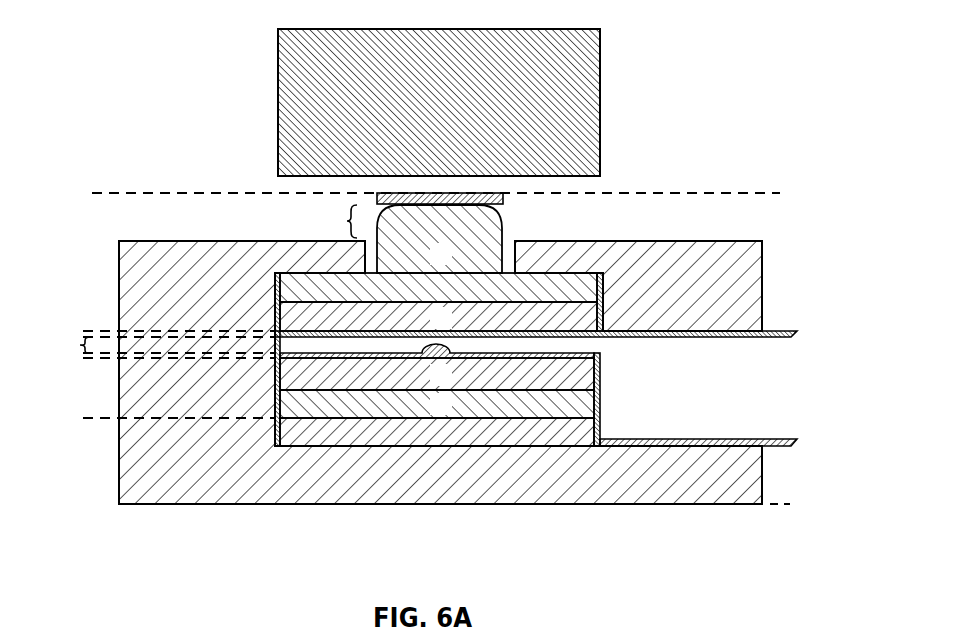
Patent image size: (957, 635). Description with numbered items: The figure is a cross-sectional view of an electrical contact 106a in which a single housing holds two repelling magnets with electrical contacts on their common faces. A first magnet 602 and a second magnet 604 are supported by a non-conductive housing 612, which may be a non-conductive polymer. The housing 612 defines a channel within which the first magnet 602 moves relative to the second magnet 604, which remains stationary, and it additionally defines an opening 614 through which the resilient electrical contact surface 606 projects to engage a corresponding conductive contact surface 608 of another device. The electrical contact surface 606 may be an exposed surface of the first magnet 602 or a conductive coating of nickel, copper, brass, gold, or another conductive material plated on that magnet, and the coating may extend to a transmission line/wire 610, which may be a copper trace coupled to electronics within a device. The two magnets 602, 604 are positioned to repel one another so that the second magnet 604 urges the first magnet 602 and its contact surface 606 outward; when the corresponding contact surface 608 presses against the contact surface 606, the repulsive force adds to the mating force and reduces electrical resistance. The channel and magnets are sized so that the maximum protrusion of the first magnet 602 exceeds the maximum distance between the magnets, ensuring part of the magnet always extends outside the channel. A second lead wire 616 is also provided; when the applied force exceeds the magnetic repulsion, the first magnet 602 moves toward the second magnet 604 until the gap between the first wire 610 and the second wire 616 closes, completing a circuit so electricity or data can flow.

The electrical contact 106a is at (463, 383).
The first magnet 602 is at (92, 193).
The second magnet 604 is at (92, 358).
The electrical contact surface 606 is at (377, 200).
The corresponding conductive contact surface 608 is at (600, 102).
The transmission line/wire 610 is at (767, 328).
The non-conductive housing 612 is at (260, 504).
The opening 614 is at (504, 240).
The second lead wire 616 is at (785, 438).